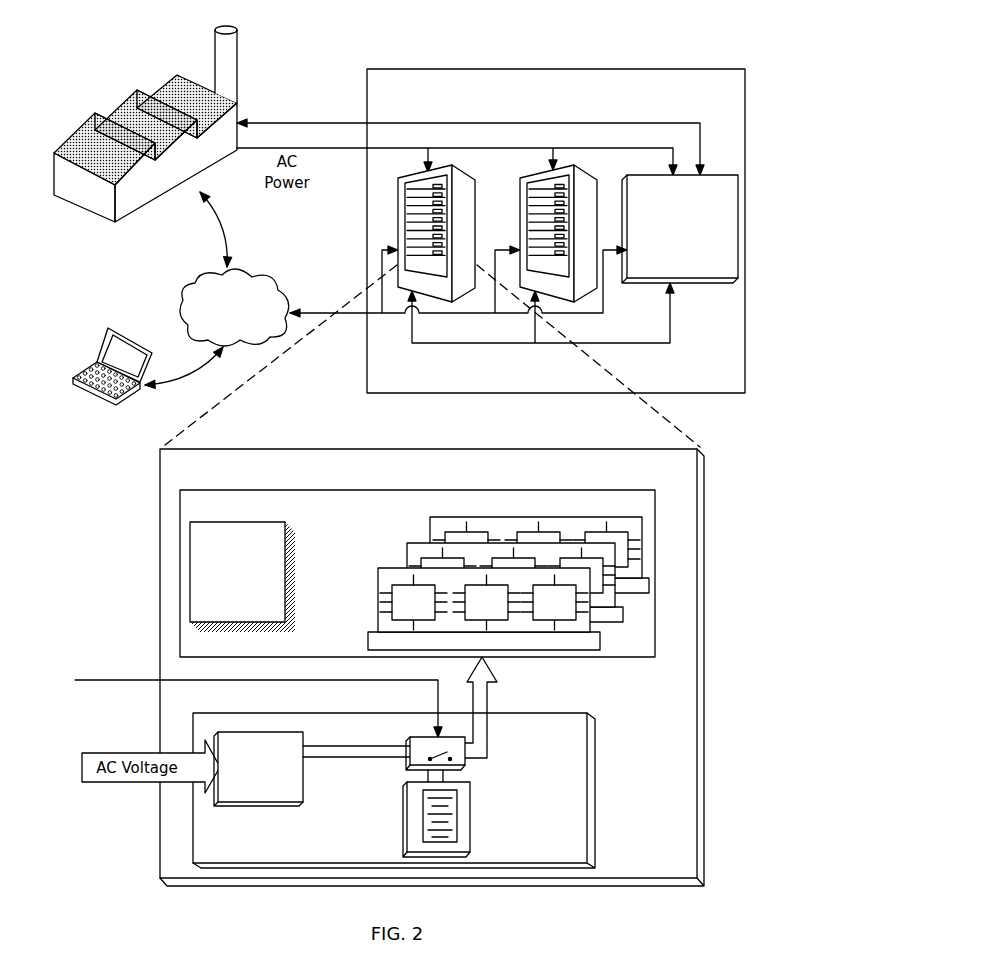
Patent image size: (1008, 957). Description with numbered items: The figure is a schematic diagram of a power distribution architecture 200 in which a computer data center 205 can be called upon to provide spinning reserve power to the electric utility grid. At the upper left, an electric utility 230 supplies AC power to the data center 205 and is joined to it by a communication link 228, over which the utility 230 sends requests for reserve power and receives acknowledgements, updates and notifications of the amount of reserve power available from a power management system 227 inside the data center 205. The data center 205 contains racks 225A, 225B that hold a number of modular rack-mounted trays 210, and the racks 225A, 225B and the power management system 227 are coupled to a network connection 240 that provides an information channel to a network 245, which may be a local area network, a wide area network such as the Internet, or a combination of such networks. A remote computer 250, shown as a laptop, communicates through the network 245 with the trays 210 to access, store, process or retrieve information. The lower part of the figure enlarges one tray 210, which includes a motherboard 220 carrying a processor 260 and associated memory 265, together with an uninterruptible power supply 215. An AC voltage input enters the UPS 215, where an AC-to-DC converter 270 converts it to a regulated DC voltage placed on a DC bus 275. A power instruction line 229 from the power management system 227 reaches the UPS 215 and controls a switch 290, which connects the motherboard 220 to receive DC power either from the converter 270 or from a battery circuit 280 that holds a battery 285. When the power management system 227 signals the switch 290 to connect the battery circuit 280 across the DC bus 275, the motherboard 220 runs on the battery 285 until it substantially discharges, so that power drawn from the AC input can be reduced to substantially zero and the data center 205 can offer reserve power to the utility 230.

The power distribution architecture 200 is at (645, 33).
The computer data center 205 is at (665, 69).
The modular rack-mounted tray 210 is at (432, 667).
The uninterruptible power supply (UPS) 215 is at (394, 790).
The computer motherboard 220 is at (417, 573).
The rack 225A is at (467, 193).
The rack 225B is at (580, 172).
The power management system 227 is at (693, 280).
The communication link 228 is at (405, 123).
The power instruction line 229 is at (483, 345).
The electric utility 230 is at (145, 135).
The network connection 240 is at (353, 313).
The network 245 is at (234, 307).
The remote computer 250 is at (121, 331).
The processor 260 is at (242, 577).
The memory 265 is at (652, 552).
The AC-to-DC converter 270 is at (263, 798).
The DC bus 275 is at (331, 760).
The battery circuit 280 is at (470, 814).
The battery 285 is at (457, 835).
The switch 290 is at (466, 766).